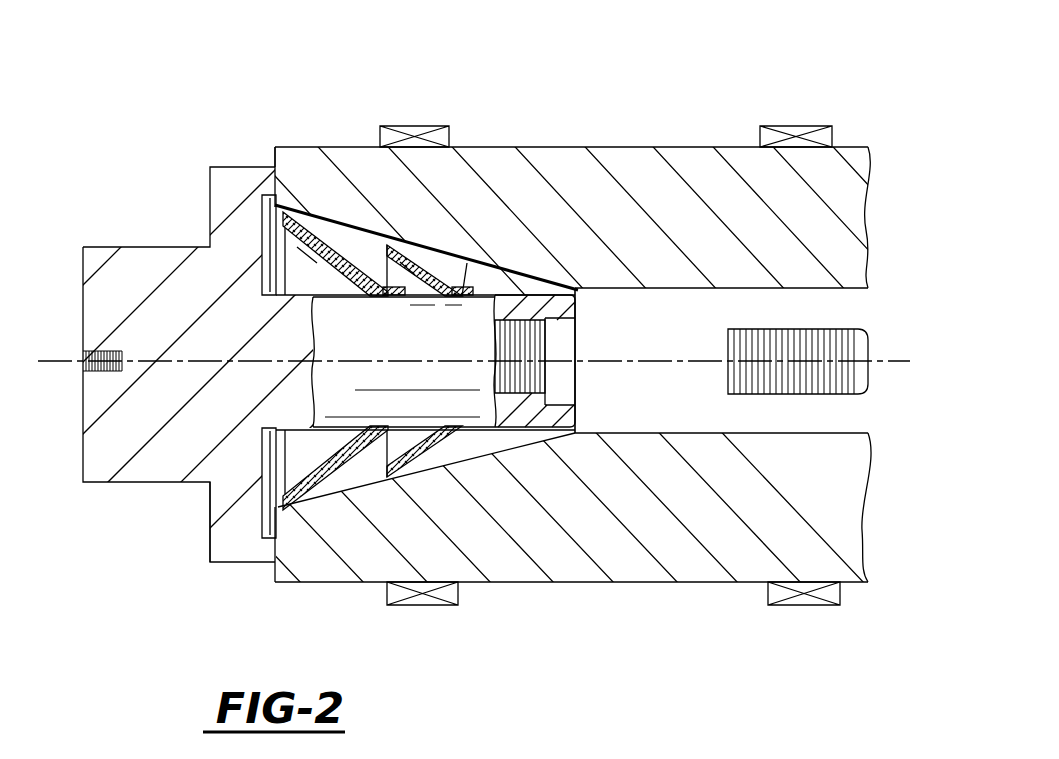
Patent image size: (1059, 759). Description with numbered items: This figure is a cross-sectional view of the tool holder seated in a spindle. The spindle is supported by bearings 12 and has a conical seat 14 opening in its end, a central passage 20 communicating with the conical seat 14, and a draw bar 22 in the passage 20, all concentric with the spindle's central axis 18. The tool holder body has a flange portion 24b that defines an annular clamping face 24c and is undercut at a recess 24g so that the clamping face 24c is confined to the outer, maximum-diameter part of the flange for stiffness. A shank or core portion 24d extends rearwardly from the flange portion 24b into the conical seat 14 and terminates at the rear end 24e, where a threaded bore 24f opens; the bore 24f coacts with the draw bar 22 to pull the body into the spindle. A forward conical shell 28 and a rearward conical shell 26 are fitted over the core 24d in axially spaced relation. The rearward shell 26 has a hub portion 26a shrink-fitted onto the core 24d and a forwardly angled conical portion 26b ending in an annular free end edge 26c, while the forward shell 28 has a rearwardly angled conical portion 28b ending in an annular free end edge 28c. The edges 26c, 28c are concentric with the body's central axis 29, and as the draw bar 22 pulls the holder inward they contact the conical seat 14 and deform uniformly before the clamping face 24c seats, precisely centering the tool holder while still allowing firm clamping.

The bearings 12 is at (449, 126).
The conical seat 14 is at (550, 282).
The central axis 18 is at (652, 363).
The central passage 20 is at (732, 288).
The draw bar 22 is at (855, 392).
The flange portion 24b is at (220, 190).
The annular clamping face 24c is at (284, 172).
The core portion 24d is at (594, 288).
The rear end 24e is at (584, 329).
The threaded bore 24f is at (572, 365).
The undercut recess 24g is at (268, 518).
The rearward conical shell 26 is at (437, 258).
The hub portion 26a is at (467, 263).
The forwardly angled conical portion 26b is at (405, 237).
The annular free end edge 26c is at (393, 482).
The forward conical shell 28 is at (340, 240).
The rearwardly angled conical portion 28b is at (308, 262).
The annular free end edge 28c is at (295, 510).
The central axis 29 is at (146, 360).